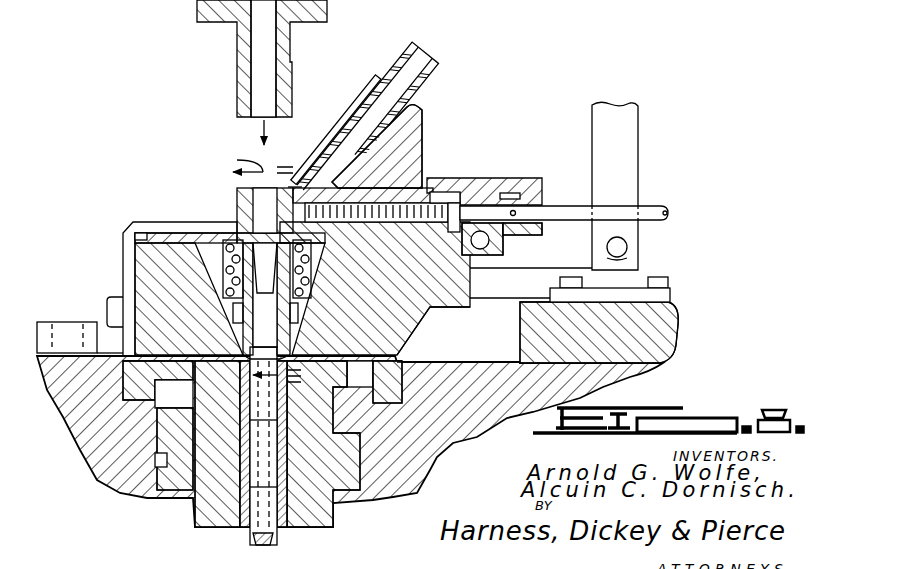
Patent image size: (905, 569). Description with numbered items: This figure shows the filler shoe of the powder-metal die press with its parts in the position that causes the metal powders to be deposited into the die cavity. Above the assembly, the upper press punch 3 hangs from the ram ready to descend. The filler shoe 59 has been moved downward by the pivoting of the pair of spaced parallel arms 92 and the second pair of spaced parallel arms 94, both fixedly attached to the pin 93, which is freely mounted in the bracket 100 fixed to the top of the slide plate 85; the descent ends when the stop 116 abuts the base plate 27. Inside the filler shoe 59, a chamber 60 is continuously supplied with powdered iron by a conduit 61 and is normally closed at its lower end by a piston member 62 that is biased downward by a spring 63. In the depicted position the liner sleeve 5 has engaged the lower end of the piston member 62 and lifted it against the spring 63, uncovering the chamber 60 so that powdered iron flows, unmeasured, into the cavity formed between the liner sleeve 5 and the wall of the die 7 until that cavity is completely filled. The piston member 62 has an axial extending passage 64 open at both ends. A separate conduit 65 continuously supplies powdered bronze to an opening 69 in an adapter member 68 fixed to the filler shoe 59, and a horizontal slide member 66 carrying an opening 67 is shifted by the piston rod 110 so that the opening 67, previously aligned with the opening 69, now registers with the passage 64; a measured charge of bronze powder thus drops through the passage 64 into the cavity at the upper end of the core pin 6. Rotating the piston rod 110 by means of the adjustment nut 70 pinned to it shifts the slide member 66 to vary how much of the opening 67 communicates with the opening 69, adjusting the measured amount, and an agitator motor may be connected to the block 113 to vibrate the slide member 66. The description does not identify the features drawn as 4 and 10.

The upper press punch 3 is at (292, 70).
The needle 4 is at (333, 503).
The liner sleeve 5 is at (253, 534).
The core pin 6 is at (273, 537).
The die 7 is at (205, 512).
The direction arrow 10 is at (259, 278).
The base plate 27 is at (90, 457).
The filler shoe 59 is at (413, 328).
The chamber 60 is at (183, 250).
The conduit 61 is at (300, 350).
The piston member 62 is at (300, 328).
The spring 63 is at (313, 277).
The axial extending passage 64 is at (260, 250).
The conduit 65 is at (420, 52).
The horizontal slide member 66 is at (427, 183).
The opening 67 is at (278, 187).
The adapter member 68 is at (410, 127).
The opening 69 is at (353, 133).
The adjustment nut 70 is at (542, 232).
The slide plate 85 is at (660, 326).
The pair of spaced parallel arms 92 is at (640, 130).
The pin 93 is at (624, 252).
The second pair of spaced parallel arms 94 is at (627, 238).
The bracket 100 is at (663, 293).
The piston rod 110 is at (657, 207).
The block 113 is at (486, 250).
The stop 116 is at (62, 327).